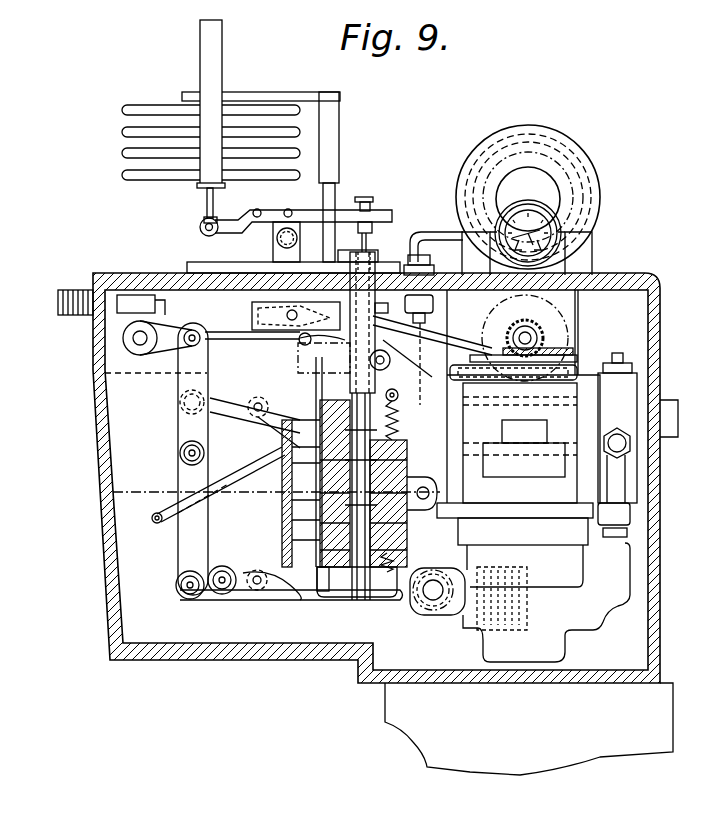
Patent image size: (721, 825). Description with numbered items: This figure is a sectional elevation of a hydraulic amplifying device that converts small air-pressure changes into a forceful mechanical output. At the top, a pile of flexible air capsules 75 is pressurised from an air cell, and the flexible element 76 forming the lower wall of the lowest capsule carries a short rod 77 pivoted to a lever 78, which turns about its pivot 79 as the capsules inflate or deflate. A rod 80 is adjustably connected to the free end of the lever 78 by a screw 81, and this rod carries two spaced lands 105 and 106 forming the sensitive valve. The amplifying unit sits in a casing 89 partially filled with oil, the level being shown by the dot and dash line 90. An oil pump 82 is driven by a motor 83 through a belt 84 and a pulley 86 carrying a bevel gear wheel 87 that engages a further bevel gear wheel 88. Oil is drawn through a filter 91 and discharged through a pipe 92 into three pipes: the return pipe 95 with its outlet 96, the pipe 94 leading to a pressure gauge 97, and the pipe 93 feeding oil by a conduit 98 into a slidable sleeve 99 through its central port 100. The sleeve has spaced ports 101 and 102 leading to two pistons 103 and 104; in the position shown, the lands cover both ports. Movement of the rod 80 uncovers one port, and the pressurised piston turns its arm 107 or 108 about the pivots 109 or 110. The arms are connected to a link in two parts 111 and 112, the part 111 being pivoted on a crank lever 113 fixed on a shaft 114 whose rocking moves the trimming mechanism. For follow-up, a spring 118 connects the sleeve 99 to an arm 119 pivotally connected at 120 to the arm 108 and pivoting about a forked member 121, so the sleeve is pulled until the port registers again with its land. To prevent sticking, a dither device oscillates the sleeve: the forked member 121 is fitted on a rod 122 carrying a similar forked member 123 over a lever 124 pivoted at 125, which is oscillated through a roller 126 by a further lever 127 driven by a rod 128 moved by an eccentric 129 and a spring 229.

The flexible air capsules 75 is at (121, 175).
The flexible element 76 is at (162, 181).
The short rod 77 is at (214, 200).
The lever 78 is at (313, 214).
The pivot 79 is at (276, 240).
The rod 80 is at (372, 244).
The screw 81 is at (363, 196).
The oil pump 82 is at (555, 640).
The motor 83 is at (600, 193).
The belt 84 is at (592, 262).
The pulley 86 is at (580, 298).
The bevel gear wheel 87 is at (545, 338).
The bevel gear wheel 88 is at (575, 358).
The casing 89 is at (660, 512).
The dot and dash line 90 is at (276, 479).
The filter 91 is at (508, 628).
The pipe 92 is at (622, 465).
The pipe 93 is at (523, 531).
The pipe 94 is at (440, 233).
The return pipe 95 is at (518, 446).
The outlet 96 is at (156, 523).
The pressure gauge 97 is at (545, 243).
The conduit 98 is at (420, 511).
The slidable sleeve 99 is at (382, 409).
The central port 100 is at (312, 483).
The port 101 is at (363, 483).
The port 102 is at (312, 505).
The piston 103 is at (262, 425).
The piston 104 is at (290, 552).
The land 105 is at (284, 472).
The land 106 is at (333, 591).
The arm 107 is at (282, 396).
The arm 108 is at (272, 592).
The pivot 109 is at (250, 402).
The pivot 110 is at (228, 598).
The link part 111 is at (190, 378).
The link part 112 is at (200, 514).
The crank lever 113 is at (184, 328).
The shaft 114 is at (135, 339).
The spring 118 is at (383, 597).
The arm 119 is at (350, 600).
The pivot 120 is at (193, 599).
The forked member 121 is at (318, 600).
The rod 122 is at (330, 392).
The forked member 123 is at (343, 322).
The lever 124 is at (202, 352).
The pivot 125 is at (380, 355).
The roller 126 is at (300, 340).
The lever 127 is at (258, 320).
The rod 128 is at (452, 338).
The eccentric 129 is at (524, 321).
The spring 229 is at (397, 557).